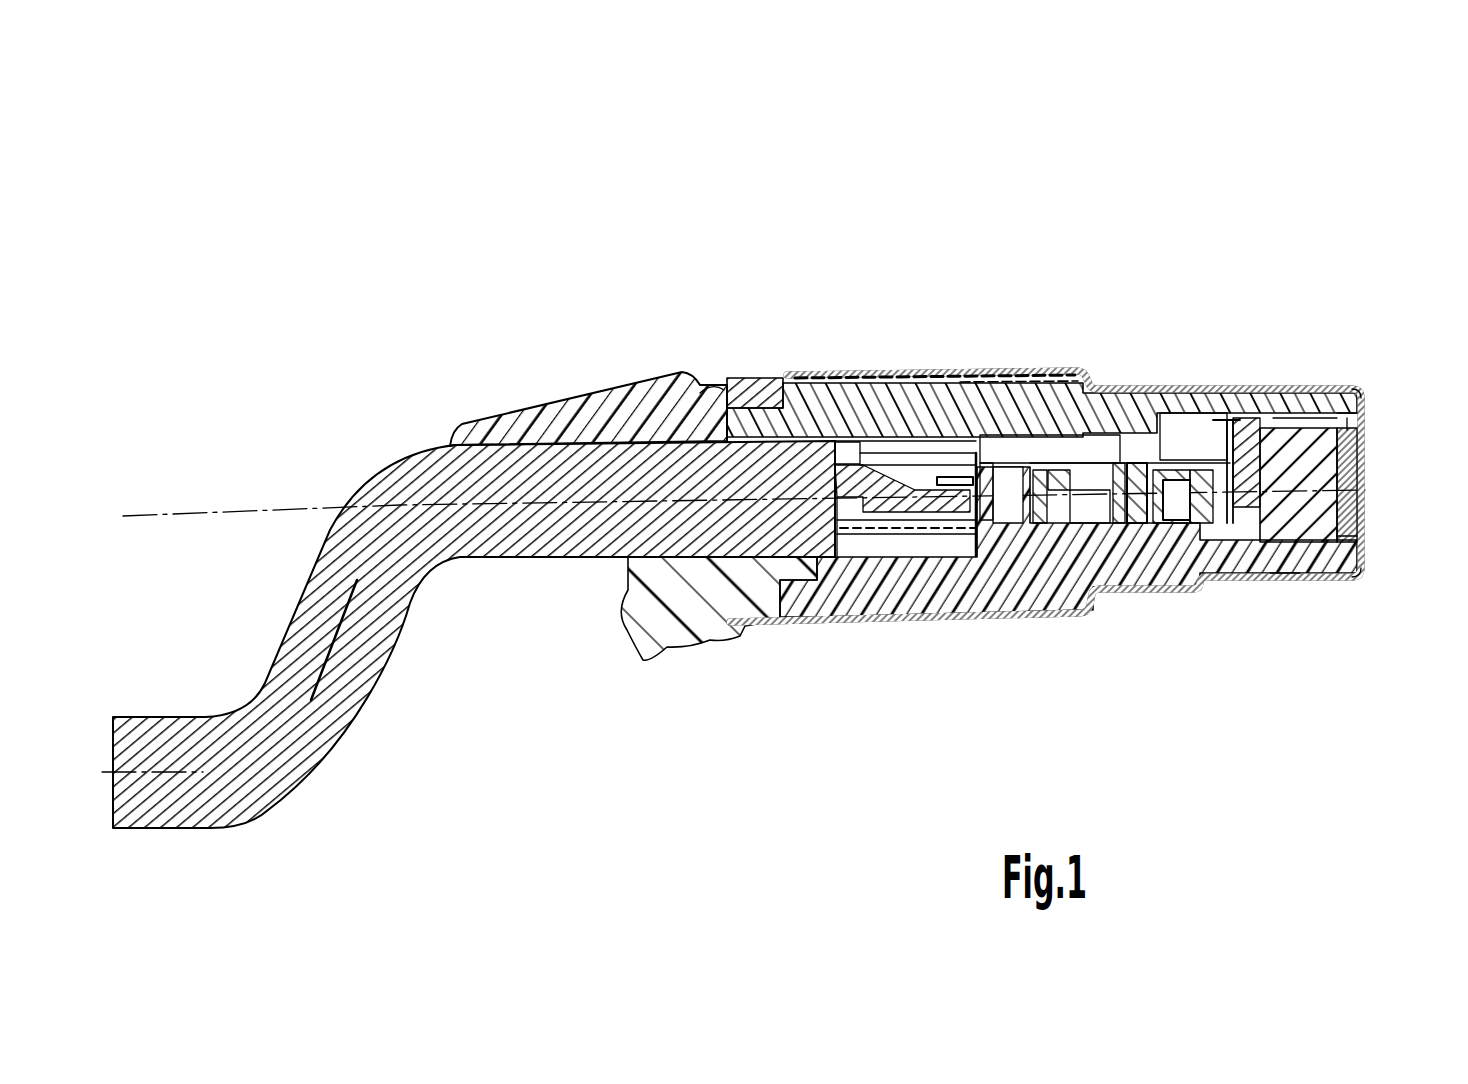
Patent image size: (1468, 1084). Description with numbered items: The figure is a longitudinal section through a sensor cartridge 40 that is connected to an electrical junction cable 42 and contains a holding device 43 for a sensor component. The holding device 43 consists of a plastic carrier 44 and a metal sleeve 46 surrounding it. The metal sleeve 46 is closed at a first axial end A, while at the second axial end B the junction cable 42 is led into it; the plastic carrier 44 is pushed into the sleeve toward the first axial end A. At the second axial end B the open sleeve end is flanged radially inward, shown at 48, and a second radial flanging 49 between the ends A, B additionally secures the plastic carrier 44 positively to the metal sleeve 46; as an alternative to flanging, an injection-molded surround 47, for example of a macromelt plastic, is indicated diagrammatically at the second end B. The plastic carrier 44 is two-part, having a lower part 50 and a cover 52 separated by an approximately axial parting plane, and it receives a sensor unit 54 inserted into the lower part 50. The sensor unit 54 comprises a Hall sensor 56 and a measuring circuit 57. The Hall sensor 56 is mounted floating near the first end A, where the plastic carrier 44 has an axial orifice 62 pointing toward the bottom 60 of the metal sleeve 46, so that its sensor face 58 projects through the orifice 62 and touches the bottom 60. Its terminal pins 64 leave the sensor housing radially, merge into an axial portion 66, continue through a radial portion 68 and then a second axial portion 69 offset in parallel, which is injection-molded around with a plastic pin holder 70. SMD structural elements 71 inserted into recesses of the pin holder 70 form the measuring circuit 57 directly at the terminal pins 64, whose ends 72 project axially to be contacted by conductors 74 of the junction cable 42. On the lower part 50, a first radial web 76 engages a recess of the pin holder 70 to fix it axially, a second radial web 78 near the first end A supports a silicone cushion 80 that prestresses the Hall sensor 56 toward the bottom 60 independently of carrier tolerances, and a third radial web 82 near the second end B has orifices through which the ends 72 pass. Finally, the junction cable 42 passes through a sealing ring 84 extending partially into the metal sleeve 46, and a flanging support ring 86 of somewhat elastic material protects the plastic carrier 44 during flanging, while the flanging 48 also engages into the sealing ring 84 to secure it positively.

The sensor cartridge 40 is at (1195, 238).
The electrical junction cable 42 is at (240, 727).
The holding device 43 is at (795, 365).
The plastic carrier 44 is at (1337, 418).
The metal sleeve 46 is at (890, 623).
The injection-molded surround 47 is at (637, 629).
The flanging 48 is at (717, 373).
The second radial flanging 49 is at (1137, 400).
The lower part 50 is at (1023, 573).
The cover 52 is at (1113, 400).
The sensor unit 54 is at (1212, 530).
The Hall sensor 56 is at (1367, 460).
The measuring circuit 57 is at (1088, 500).
The sensor face 58 is at (1367, 503).
The bottom 60 is at (1387, 390).
The axial orifice 62 is at (1362, 575).
The terminal pins 64 is at (1305, 417).
The axial portion 66 is at (1262, 420).
The radial portion 68 is at (1182, 400).
The second axial portion 69 is at (1152, 400).
The pin holder 70 is at (952, 370).
The SMD structural elements 71 is at (1085, 440).
The ends 72 is at (862, 370).
The conductors 74 is at (920, 493).
The first radial web 76 is at (1138, 500).
The second radial web 78 is at (1283, 583).
The silicone cushion 80 is at (1367, 427).
The third radial web 82 is at (973, 500).
The sealing ring 84 is at (588, 378).
The flanging support ring 86 is at (752, 373).
The first axial end A is at (1365, 490).
The second axial end B is at (707, 702).